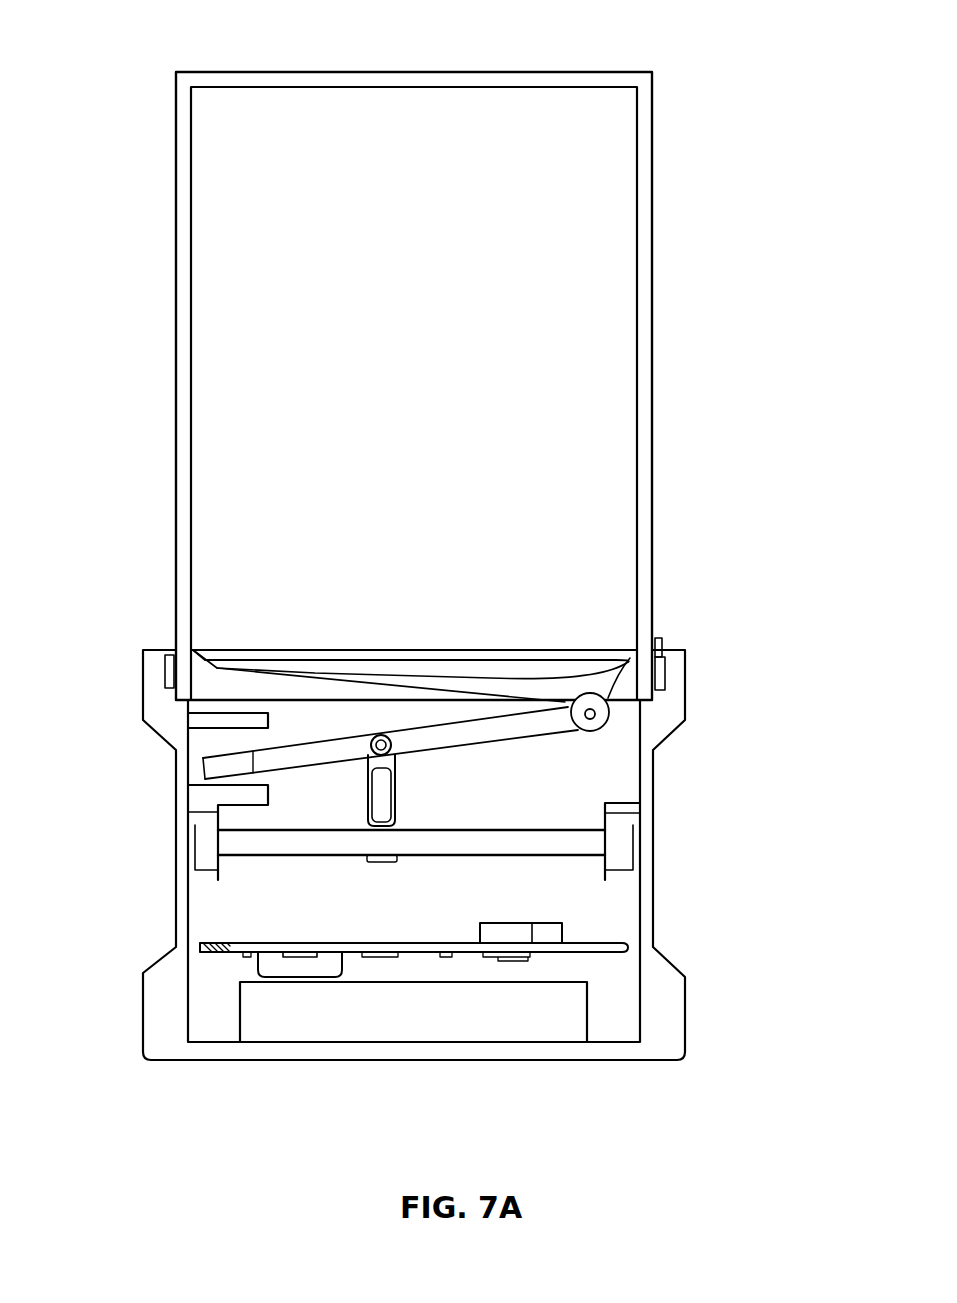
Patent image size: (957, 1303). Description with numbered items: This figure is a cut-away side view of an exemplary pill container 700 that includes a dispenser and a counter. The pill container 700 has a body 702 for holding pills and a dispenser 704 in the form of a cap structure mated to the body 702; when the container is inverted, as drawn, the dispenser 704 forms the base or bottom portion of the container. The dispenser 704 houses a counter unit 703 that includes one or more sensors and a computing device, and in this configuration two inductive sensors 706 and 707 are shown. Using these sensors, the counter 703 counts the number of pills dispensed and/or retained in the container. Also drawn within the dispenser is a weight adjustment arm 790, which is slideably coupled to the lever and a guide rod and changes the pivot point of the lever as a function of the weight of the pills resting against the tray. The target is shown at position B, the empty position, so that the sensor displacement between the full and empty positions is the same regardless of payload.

The pill container 700 is at (440, 537).
The body 702 is at (458, 78).
The dispenser 704 is at (700, 702).
The counter unit 703 is at (603, 894).
The inductive sensor 706 is at (533, 932).
The inductive sensor 707 is at (277, 967).
The weight adjustment arm 790 is at (400, 792).
The position B is at (190, 765).